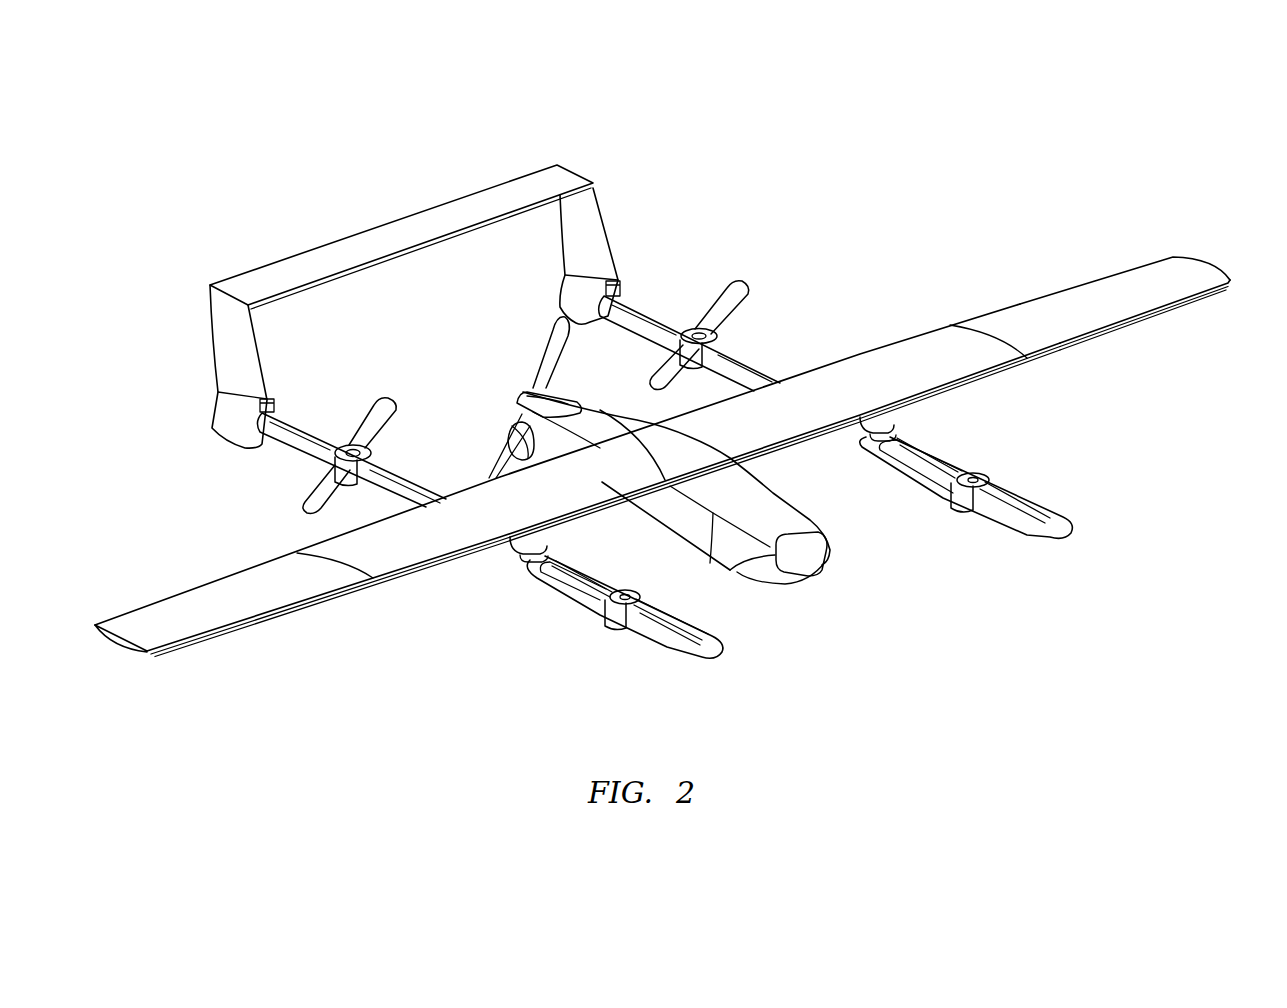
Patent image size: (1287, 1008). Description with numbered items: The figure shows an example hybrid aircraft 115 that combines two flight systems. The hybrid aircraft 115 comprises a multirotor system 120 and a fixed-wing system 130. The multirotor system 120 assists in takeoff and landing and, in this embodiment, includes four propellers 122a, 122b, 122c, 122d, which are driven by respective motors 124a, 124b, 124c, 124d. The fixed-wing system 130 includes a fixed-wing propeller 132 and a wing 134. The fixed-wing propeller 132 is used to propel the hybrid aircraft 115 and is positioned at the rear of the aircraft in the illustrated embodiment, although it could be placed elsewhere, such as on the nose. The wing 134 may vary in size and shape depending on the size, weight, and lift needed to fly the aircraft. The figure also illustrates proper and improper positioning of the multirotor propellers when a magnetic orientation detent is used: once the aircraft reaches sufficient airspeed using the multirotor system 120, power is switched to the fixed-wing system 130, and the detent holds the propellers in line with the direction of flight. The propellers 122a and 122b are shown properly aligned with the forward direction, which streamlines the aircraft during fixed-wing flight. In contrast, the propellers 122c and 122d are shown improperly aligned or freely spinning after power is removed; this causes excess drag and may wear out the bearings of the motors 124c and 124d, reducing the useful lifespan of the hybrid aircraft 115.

The hybrid aircraft 115 is at (1074, 151).
The multirotor system 120 is at (503, 560).
The propeller 122a is at (697, 630).
The propeller 122b is at (1040, 513).
The propeller 122c is at (745, 297).
The propeller 122d is at (310, 492).
The motor 124a is at (607, 618).
The motor 124b is at (960, 500).
The motor 124c is at (687, 323).
The motor 124d is at (367, 452).
The fixed-wing system 130 is at (830, 557).
The fixed-wing propeller 132 is at (546, 335).
The wing 134 is at (1188, 268).